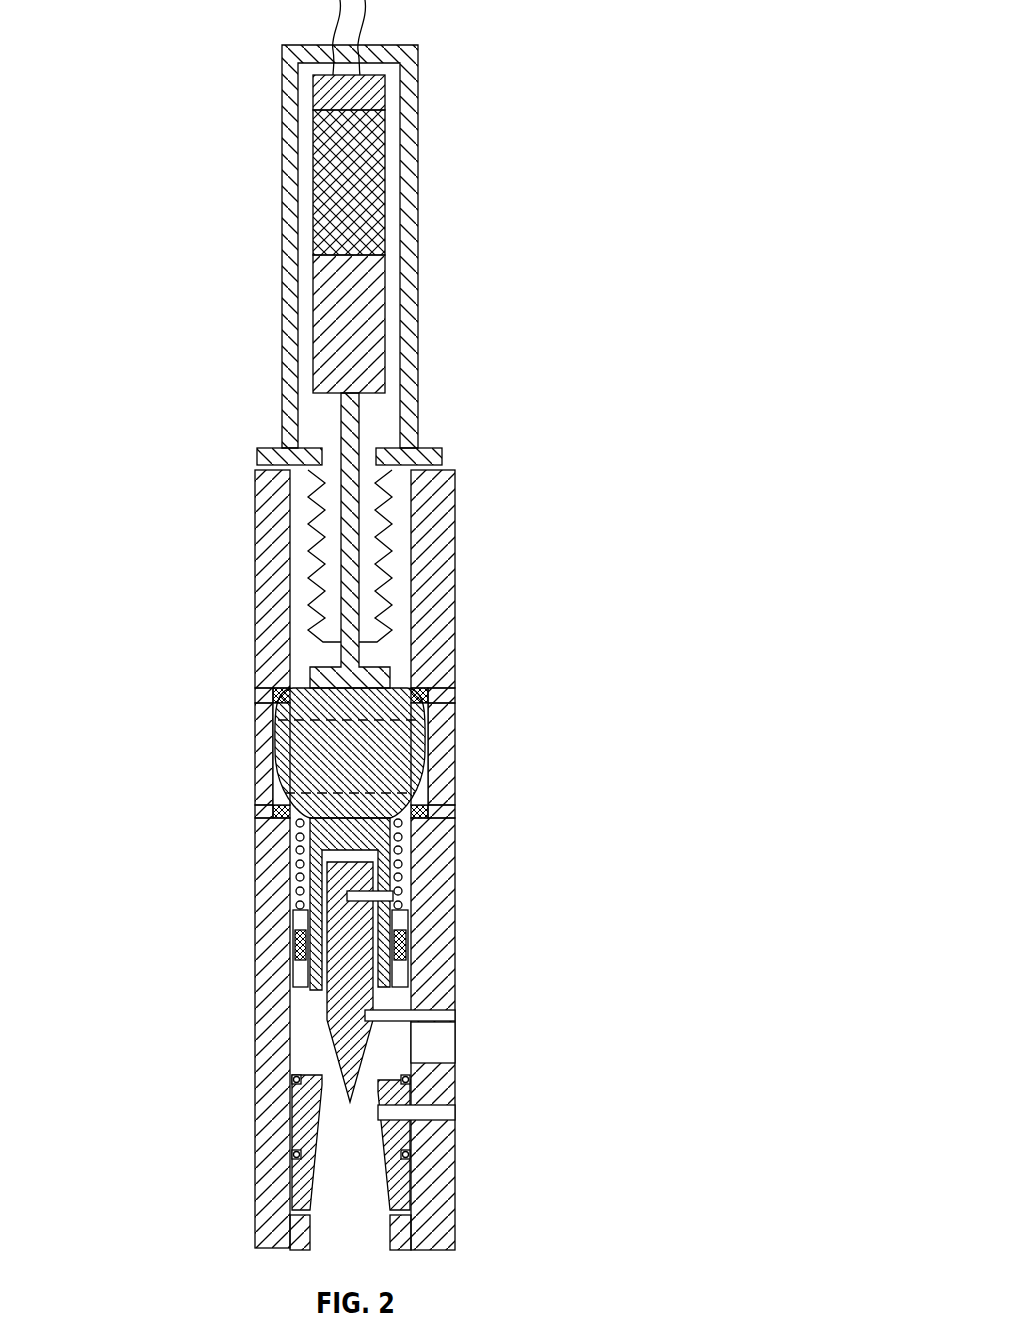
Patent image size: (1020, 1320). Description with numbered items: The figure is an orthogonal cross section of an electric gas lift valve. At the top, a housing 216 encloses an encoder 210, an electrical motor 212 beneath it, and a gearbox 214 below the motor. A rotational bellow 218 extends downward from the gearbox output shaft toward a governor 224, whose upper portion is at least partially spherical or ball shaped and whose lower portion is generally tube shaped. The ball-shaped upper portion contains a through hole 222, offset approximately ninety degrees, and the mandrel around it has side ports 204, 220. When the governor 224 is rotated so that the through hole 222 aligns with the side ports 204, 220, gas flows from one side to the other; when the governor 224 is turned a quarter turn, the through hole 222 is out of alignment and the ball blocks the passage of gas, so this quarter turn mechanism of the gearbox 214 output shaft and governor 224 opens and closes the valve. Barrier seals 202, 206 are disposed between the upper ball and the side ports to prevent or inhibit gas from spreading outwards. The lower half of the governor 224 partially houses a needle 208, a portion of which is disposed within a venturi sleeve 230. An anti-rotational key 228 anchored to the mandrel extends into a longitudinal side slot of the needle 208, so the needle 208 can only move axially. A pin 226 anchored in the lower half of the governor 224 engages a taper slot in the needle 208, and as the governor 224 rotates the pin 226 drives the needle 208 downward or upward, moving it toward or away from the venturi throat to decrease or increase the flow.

The barrier seal 202 is at (278, 722).
The side port 204 is at (258, 762).
The barrier seal 206 is at (292, 966).
The needle 208 is at (335, 1082).
The encoder 210 is at (385, 93).
The electrical motor 212 is at (385, 170).
The gearbox 214 is at (385, 305).
The housing 216 is at (415, 375).
The rotational bellow 218 is at (385, 513).
The side port 220 is at (455, 712).
The through hole 222 is at (410, 790).
The governor 224 is at (415, 847).
The pin 226 is at (395, 896).
The anti-rotational key 228 is at (455, 1015).
The venturi sleeve 230 is at (400, 1130).